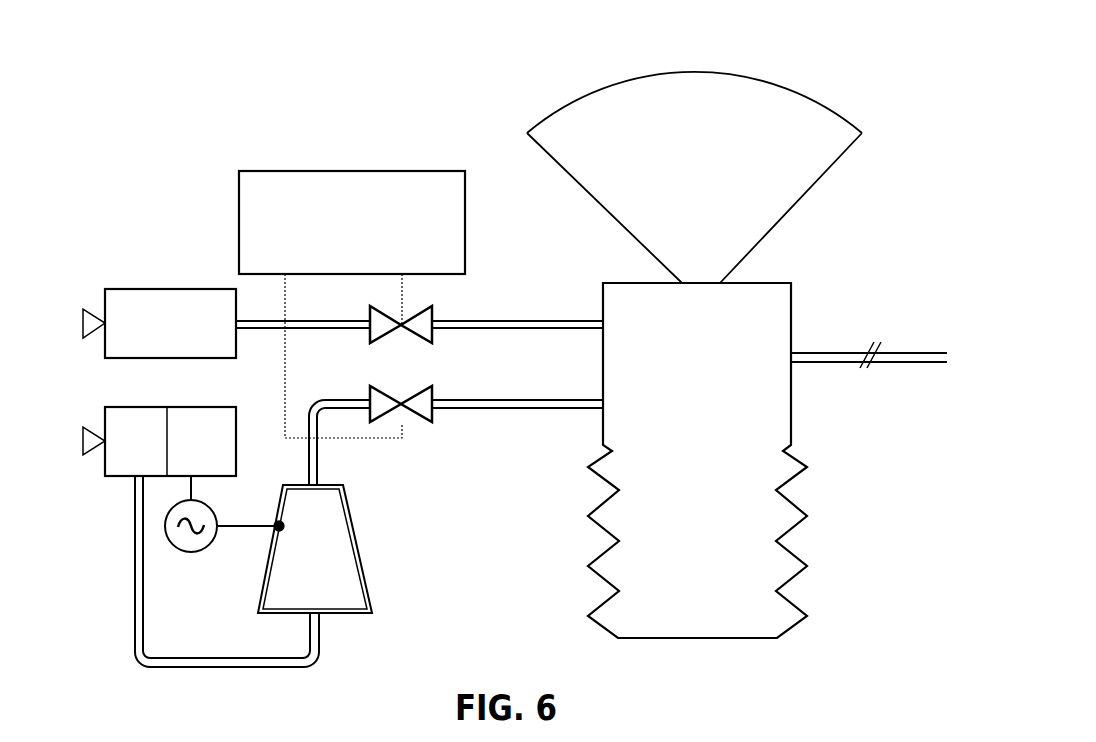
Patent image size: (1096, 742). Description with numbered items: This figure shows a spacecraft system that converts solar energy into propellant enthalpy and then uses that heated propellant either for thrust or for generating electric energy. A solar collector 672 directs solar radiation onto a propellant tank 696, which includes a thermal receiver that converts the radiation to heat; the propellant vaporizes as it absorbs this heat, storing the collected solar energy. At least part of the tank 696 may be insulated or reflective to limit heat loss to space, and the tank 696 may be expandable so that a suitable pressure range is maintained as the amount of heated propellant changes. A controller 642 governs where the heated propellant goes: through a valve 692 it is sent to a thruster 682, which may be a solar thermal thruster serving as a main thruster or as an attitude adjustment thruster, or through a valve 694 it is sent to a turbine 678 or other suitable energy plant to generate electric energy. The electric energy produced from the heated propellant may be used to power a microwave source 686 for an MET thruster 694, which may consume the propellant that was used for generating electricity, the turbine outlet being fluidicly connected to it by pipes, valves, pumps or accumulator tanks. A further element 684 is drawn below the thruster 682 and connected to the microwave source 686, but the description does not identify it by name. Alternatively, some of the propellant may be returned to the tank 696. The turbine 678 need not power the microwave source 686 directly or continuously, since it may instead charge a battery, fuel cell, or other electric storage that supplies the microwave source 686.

The controller 642 is at (366, 171).
The solar collector 672 is at (692, 70).
The turbine 678 is at (358, 552).
The thruster 682 is at (120, 289).
The sensor / heater unit 684 is at (120, 407).
The microwave source 686 is at (180, 553).
The valve 692 is at (430, 340).
The valve 694 is at (430, 420).
The propellant tank 696 is at (780, 282).